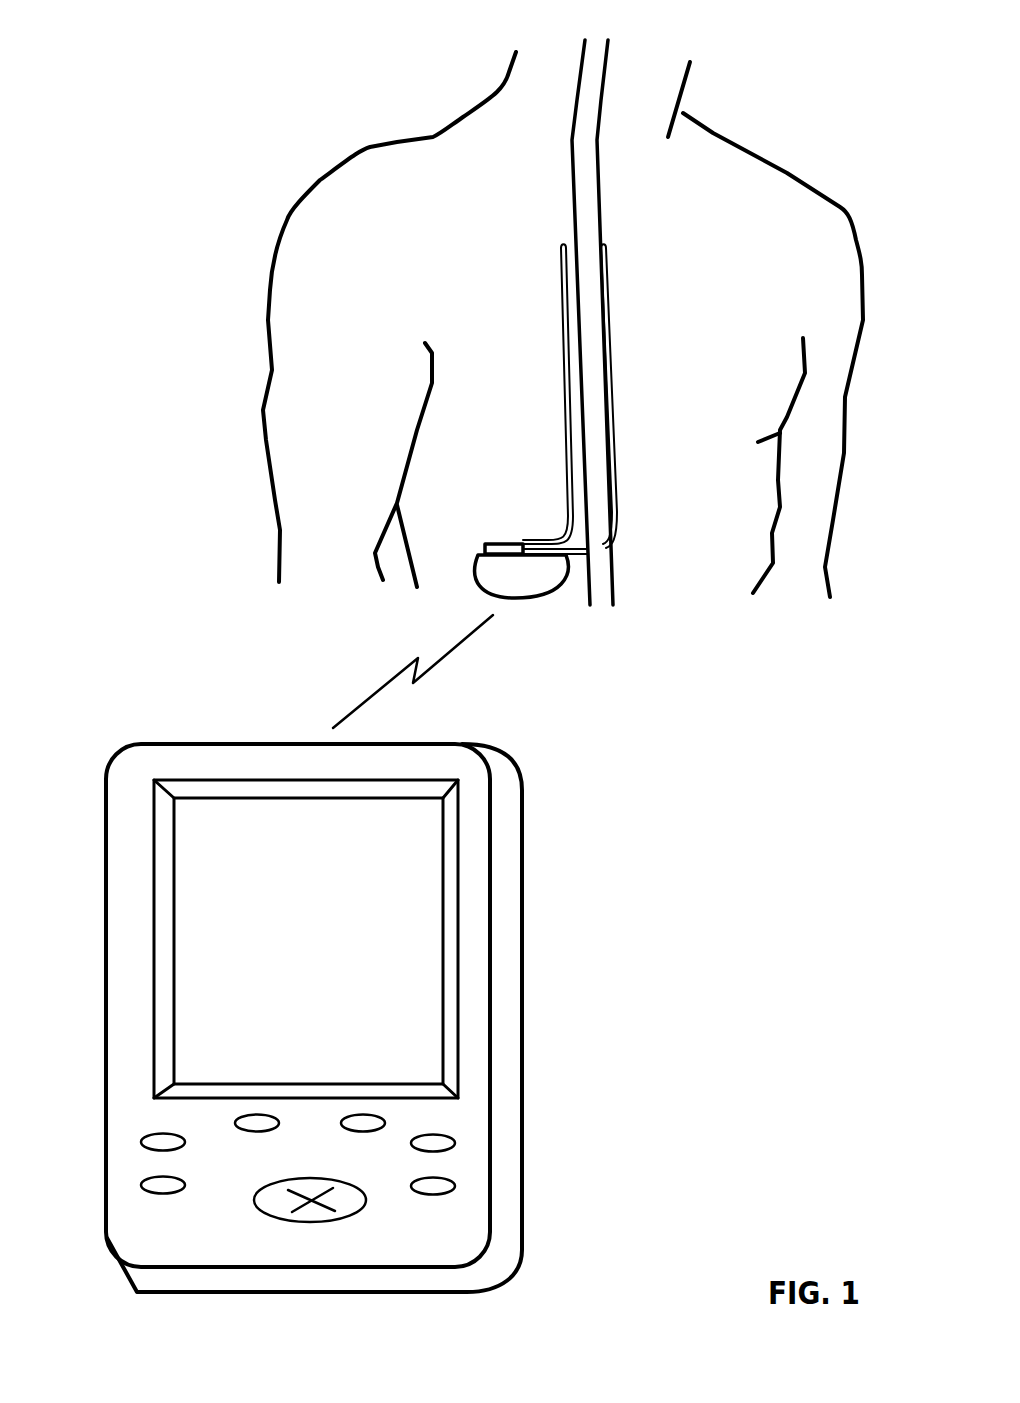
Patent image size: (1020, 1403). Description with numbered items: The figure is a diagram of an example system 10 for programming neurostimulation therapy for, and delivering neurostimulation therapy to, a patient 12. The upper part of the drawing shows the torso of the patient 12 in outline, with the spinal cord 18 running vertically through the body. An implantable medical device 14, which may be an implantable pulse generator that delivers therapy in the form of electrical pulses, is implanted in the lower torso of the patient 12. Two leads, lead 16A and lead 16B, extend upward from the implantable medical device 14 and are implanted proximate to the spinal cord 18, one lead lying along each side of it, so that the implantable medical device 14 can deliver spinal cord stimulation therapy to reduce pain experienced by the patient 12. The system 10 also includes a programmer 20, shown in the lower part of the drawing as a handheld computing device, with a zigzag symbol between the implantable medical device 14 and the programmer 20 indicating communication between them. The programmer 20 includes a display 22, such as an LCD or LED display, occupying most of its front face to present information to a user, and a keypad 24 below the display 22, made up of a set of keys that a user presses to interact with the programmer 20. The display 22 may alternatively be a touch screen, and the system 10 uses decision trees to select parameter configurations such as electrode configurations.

The system 10 is at (133, 124).
The patient 12 is at (795, 137).
The implantable medical device 14 is at (484, 550).
The lead 16A is at (567, 363).
The lead 16B is at (628, 358).
The spinal cord 18 is at (620, 183).
The programmer 20 is at (378, 983).
The display 22 is at (402, 939).
The keypad 24 is at (405, 1204).